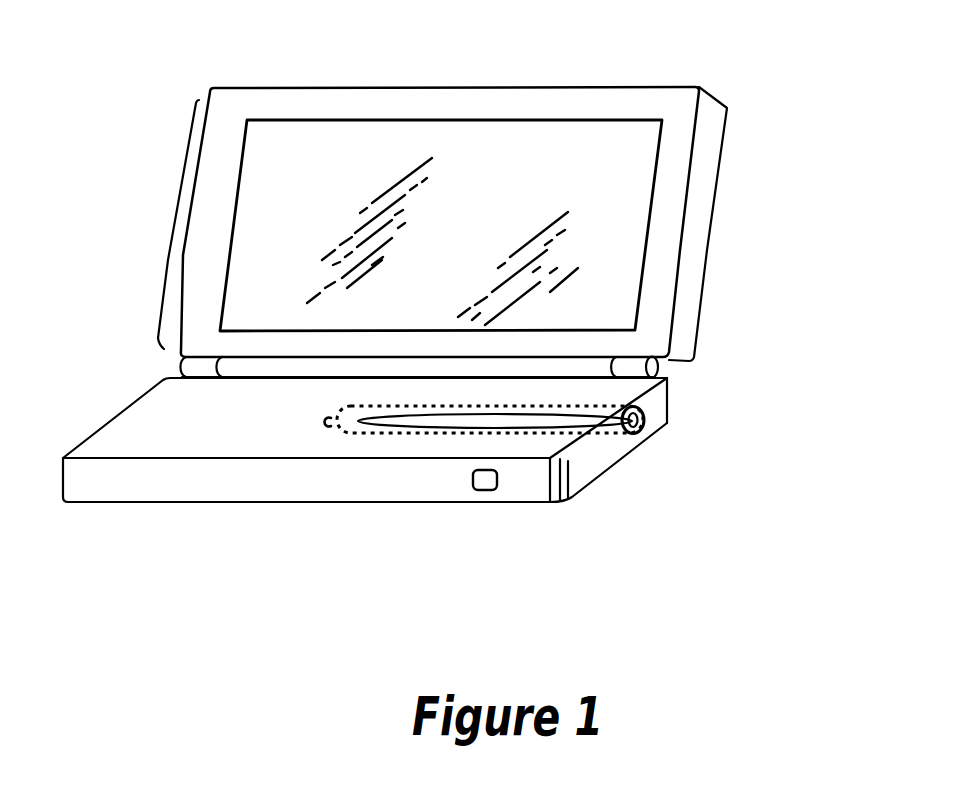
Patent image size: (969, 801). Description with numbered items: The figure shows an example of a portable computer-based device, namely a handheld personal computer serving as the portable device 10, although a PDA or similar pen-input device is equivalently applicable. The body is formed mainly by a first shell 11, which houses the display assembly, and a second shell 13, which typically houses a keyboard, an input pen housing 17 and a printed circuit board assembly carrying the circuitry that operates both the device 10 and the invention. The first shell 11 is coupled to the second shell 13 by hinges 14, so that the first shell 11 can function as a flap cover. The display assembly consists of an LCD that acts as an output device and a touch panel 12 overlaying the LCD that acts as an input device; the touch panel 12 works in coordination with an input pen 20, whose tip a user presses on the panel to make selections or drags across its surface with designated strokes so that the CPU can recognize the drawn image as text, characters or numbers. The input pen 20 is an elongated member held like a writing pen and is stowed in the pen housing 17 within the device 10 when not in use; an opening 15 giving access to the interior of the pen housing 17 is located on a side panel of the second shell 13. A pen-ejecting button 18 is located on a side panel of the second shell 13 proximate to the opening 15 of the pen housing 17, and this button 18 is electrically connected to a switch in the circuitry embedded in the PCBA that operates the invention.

The portable device 10 is at (803, 88).
The first shell 11 is at (172, 224).
The touch panel 12 is at (537, 147).
The second shell 13 is at (160, 375).
The hinges 14 is at (664, 367).
The opening 15 is at (645, 423).
The pen housing 17 is at (339, 414).
The pen-ejecting button 18 is at (495, 488).
The input pen 20 is at (512, 413).